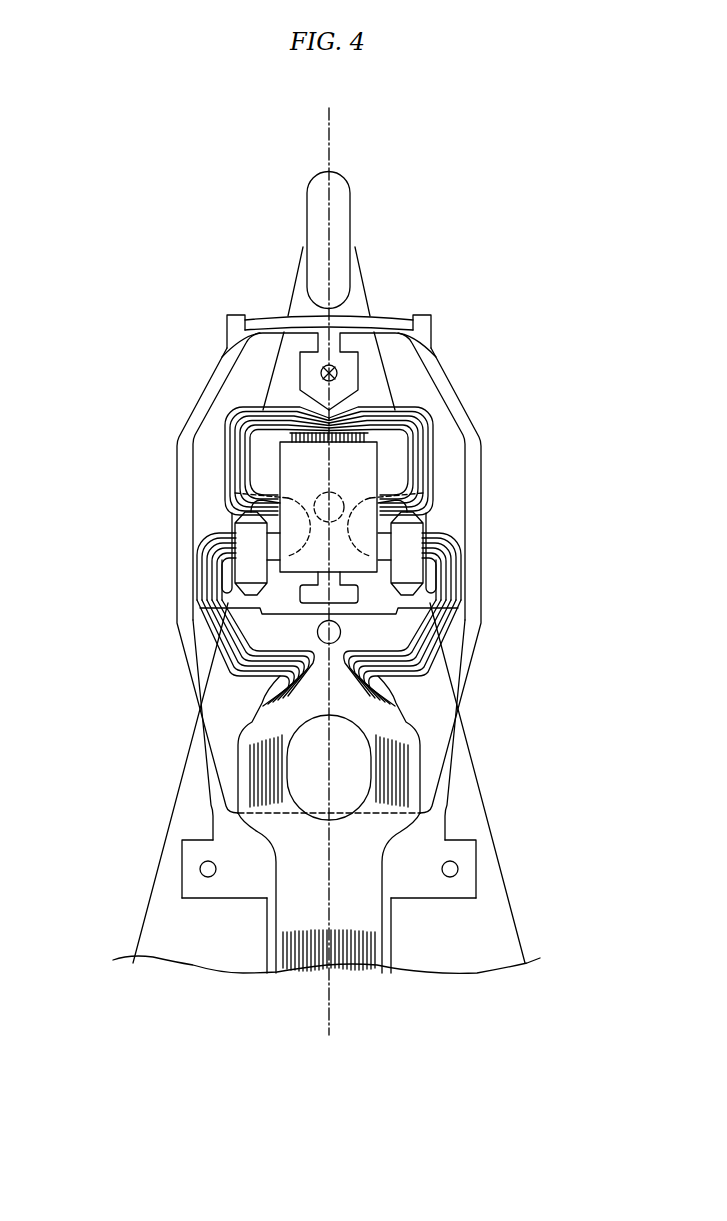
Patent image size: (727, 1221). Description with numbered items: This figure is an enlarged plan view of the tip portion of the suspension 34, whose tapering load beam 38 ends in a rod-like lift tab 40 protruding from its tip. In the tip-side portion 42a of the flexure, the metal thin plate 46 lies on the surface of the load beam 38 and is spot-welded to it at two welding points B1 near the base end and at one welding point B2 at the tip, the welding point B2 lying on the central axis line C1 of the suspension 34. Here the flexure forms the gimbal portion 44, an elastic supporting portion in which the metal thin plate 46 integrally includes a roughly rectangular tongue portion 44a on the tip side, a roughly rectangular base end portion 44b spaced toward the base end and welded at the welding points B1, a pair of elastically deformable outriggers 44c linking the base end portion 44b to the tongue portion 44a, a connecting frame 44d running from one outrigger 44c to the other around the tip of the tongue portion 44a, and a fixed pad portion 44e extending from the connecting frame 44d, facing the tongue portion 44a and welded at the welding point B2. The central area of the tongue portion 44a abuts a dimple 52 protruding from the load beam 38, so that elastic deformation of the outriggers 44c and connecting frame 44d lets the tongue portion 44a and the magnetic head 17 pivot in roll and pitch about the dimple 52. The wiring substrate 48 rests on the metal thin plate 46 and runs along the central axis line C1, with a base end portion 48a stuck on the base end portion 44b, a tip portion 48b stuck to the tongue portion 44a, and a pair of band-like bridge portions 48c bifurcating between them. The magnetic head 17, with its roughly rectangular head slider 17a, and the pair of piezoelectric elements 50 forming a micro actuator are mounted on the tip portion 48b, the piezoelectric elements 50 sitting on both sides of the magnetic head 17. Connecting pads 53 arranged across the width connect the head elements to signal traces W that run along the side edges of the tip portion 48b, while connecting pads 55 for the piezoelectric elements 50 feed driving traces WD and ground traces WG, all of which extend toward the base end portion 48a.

The central axis line C1 is at (340, 126).
The lift tab 40 is at (342, 204).
The gimbal portion 44 is at (82, 340).
The tongue portion 44a is at (458, 440).
The base end portion 44b is at (418, 838).
The outriggers 44c is at (188, 657).
The connecting frame 44d is at (210, 395).
The fixed pad portion 44e is at (352, 372).
The metal thin plate 46 is at (423, 885).
The welding points B1 is at (200, 869).
The welding point B2 is at (333, 366).
The wiring substrate 48 is at (302, 952).
The base end portion 48a is at (298, 863).
The tip portion 48b is at (240, 460).
The bridge portions 48c is at (226, 670).
The connecting pads 53 is at (233, 418).
The magnetic head 17 is at (377, 483).
The head slider 17a is at (353, 468).
The dimple 52 is at (232, 493).
The connecting pads 55 is at (248, 530).
The driving traces WD is at (245, 504).
The piezoelectric elements 50 is at (233, 572).
The ground traces WG is at (210, 622).
The signal traces W is at (245, 478).
The tip-side portion 42a is at (192, 812).
The suspension 34 is at (486, 770).
The load beam 38 is at (157, 927).